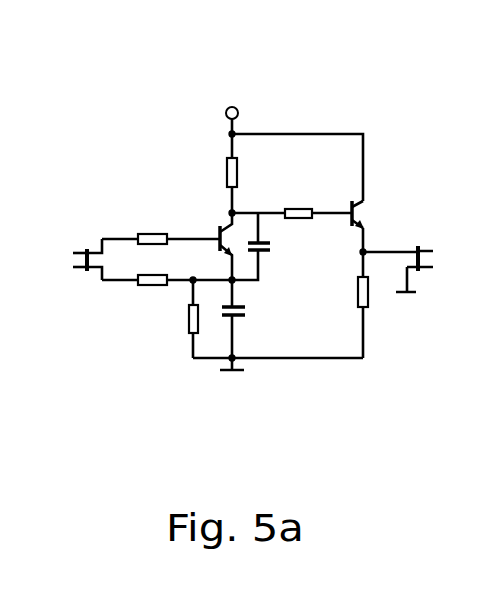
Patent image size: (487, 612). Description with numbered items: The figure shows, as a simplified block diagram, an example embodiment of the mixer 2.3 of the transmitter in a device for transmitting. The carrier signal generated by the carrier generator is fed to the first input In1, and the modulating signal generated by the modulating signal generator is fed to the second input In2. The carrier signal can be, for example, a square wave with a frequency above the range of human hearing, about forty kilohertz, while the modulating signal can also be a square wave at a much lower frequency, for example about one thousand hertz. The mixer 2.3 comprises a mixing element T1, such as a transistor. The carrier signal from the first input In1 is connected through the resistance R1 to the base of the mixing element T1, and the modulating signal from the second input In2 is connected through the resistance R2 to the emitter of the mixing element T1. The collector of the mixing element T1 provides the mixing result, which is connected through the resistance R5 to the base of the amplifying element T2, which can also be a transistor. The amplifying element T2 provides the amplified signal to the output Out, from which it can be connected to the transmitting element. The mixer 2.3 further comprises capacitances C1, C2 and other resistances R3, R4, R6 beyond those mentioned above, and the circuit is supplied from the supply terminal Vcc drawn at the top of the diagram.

The mixer 2.3 is at (145, 138).
The supply voltage terminal Vcc is at (232, 107).
The first input In1 is at (83, 251).
The second input In2 is at (82, 270).
The output Out is at (427, 246).
The resistance R1 is at (150, 224).
The resistance R2 is at (152, 296).
The resistance R3 is at (179, 309).
The resistance R4 is at (214, 172).
The resistance R5 is at (298, 201).
The resistance R6 is at (347, 292).
The mixing element T1 is at (212, 246).
The amplifying element T2 is at (345, 221).
The capacitance C1 is at (249, 332).
The capacitance C2 is at (273, 252).